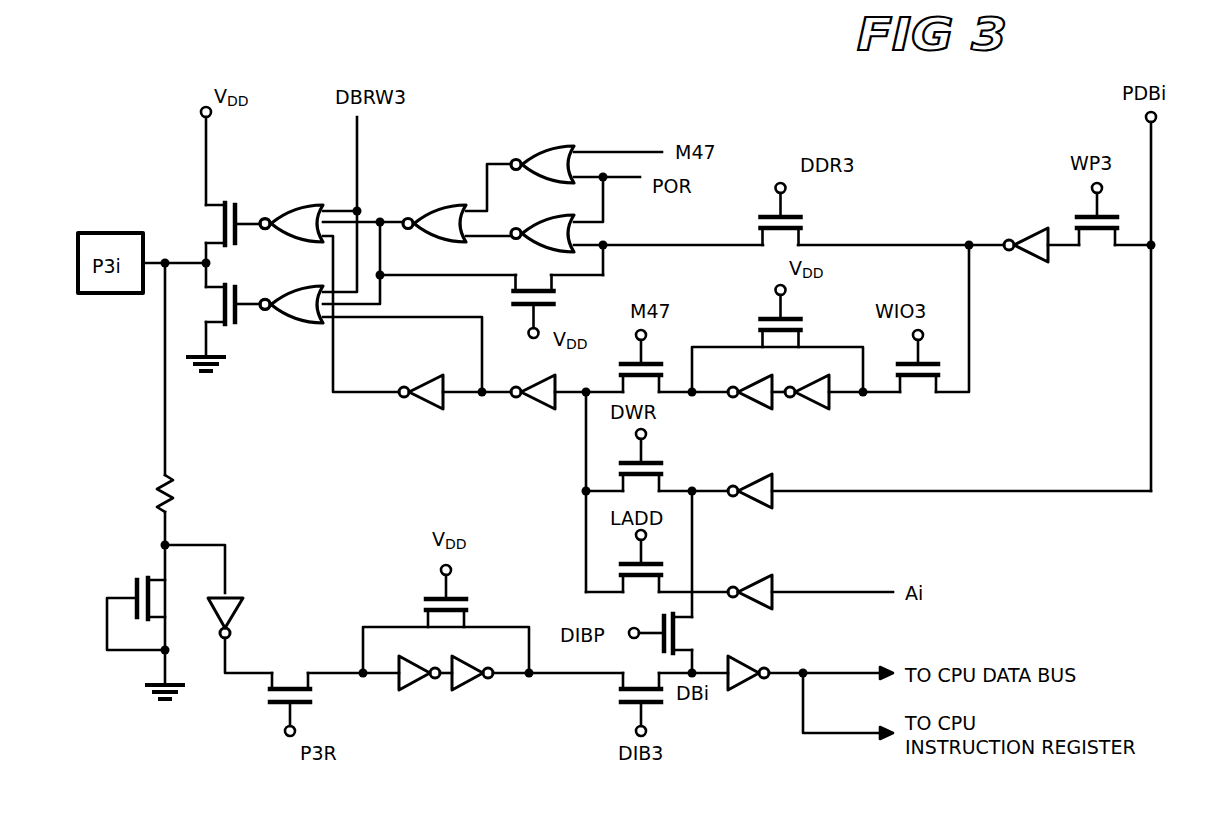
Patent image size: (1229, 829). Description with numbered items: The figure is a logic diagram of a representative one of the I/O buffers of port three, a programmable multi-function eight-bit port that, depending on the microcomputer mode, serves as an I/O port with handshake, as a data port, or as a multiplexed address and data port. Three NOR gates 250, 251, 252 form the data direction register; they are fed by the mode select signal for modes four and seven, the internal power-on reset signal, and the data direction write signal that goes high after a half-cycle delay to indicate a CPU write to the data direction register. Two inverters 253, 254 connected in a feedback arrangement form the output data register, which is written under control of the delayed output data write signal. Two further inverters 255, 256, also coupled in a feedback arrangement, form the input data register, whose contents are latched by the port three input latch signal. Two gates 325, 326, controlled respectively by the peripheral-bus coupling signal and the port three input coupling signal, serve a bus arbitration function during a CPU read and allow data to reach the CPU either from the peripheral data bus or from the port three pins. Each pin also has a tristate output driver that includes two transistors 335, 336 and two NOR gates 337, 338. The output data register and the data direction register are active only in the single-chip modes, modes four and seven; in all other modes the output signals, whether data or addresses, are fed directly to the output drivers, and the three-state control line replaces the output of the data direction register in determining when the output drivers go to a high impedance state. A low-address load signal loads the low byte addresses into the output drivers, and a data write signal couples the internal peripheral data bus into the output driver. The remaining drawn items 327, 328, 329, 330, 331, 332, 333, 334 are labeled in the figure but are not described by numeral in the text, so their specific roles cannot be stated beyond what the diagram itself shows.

The NOR gate 250 is at (540, 147).
The NOR gate 251 is at (533, 253).
The NOR gate 252 is at (437, 205).
The inverter 253 is at (750, 408).
The inverter 254 is at (805, 406).
The inverter 255 is at (414, 684).
The inverter 256 is at (469, 684).
The gate 325 is at (682, 634).
The gate 326 is at (620, 680).
The PDBi line 327 is at (1153, 200).
The inverter 328 is at (773, 506).
The node line 329 is at (694, 560).
The inverter 330 is at (748, 658).
The output node 331 is at (782, 678).
The resistor 332 is at (168, 460).
The inverter 333 is at (237, 597).
The transistor 334 is at (264, 686).
The transistor 335 is at (213, 204).
The transistor 336 is at (218, 286).
The NOR gate 337 is at (291, 204).
The NOR gate 338 is at (283, 322).